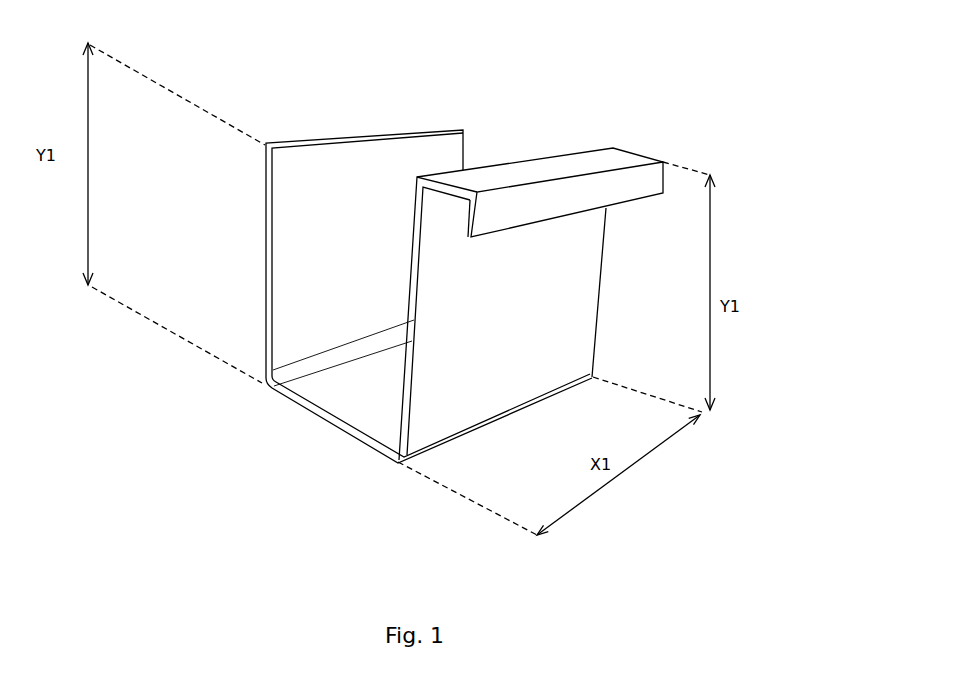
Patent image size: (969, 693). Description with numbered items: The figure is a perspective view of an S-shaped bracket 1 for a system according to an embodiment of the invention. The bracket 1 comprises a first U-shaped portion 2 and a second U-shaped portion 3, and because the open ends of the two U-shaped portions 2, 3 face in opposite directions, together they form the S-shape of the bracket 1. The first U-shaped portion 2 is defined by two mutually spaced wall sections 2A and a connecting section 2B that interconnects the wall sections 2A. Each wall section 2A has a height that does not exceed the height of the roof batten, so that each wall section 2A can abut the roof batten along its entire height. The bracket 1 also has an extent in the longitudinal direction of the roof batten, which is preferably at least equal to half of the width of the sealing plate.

The S-shaped bracket 1 is at (727, 247).
The first U-shaped portion 2 is at (352, 265).
The wall section 2A is at (297, 212).
The connecting section 2B is at (352, 400).
The second U-shaped portion 3 is at (450, 213).